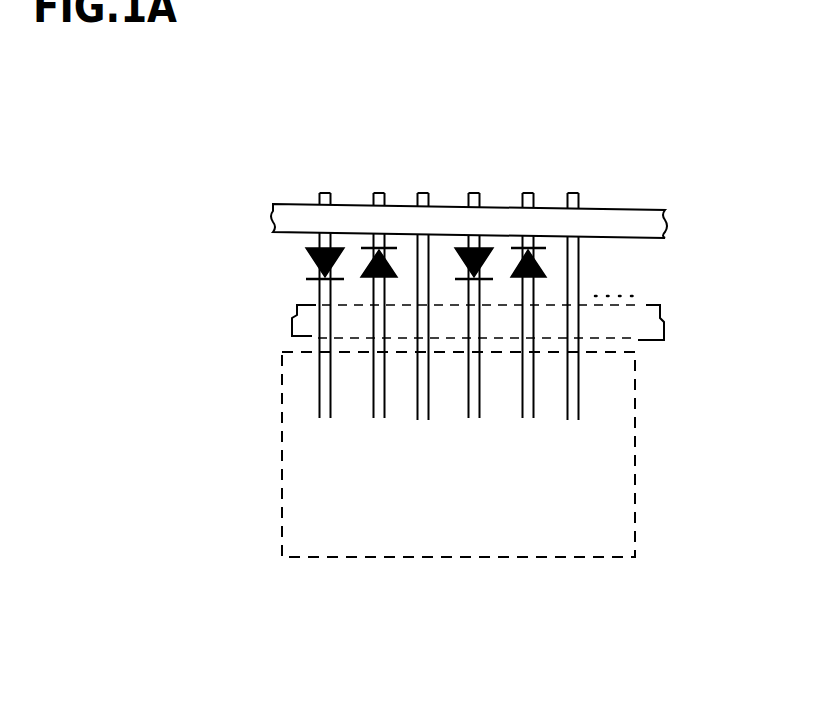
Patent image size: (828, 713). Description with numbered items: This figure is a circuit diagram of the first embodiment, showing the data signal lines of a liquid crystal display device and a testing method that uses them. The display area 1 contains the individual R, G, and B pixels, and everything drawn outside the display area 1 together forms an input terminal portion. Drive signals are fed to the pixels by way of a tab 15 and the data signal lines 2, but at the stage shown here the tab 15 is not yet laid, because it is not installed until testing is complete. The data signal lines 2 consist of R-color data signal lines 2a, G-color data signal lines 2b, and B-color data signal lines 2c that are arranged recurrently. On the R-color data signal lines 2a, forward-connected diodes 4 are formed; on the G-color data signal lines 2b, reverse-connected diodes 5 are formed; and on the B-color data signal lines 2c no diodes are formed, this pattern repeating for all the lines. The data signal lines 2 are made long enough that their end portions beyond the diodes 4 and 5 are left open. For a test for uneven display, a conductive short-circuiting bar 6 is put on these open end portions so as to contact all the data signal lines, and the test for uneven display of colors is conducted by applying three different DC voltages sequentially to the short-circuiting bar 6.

The display area 1 is at (297, 445).
The data signal lines 2 is at (302, 140).
The R-color data signal lines 2a is at (326, 192).
The G-color data signal lines 2b is at (382, 190).
The B-color data signal lines 2c is at (423, 190).
The forward-connected diodes 4 is at (310, 262).
The reverse-connected diodes 5 is at (362, 278).
The short-circuiting bar 6 is at (280, 220).
The tab 15 is at (664, 323).